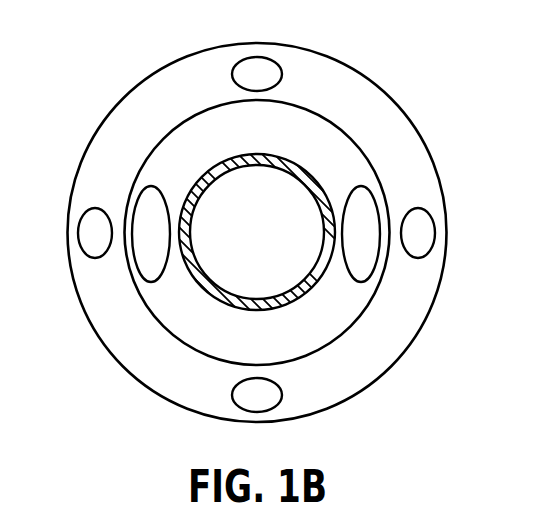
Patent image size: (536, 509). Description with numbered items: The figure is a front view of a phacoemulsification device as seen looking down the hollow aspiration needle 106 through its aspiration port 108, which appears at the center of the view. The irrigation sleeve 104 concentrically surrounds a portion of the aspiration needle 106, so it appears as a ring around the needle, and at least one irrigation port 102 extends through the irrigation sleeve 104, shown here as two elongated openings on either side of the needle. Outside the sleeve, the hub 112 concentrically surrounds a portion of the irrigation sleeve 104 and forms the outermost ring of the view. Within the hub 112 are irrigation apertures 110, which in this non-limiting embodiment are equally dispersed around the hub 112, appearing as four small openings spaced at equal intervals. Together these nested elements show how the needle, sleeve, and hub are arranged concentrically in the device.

The irrigation port 102 is at (150, 187).
The irrigation sleeve 104 is at (237, 132).
The hollow aspiration needle 106 is at (208, 173).
The aspiration port 108 is at (257, 232).
The irrigation aperture 110 is at (435, 231).
The hub 112 is at (342, 80).